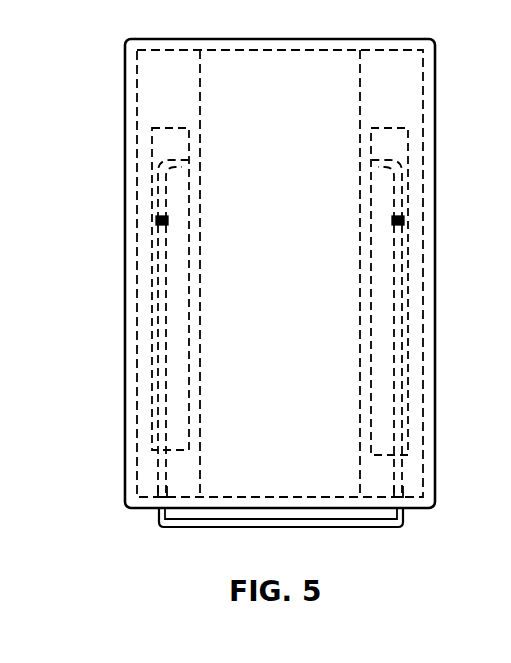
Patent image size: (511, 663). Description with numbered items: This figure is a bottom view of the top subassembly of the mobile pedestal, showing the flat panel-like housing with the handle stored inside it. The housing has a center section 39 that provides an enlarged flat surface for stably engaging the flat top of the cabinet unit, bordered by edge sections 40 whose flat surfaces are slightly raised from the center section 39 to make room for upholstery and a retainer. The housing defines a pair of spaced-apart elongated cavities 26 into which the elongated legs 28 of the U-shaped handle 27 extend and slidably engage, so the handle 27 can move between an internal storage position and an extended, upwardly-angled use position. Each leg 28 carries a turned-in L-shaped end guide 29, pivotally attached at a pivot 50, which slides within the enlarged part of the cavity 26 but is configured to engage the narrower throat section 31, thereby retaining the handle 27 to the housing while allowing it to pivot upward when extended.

The edge sections 40 is at (137, 68).
The center section 39 is at (274, 118).
The elongated legs 28 is at (166, 328).
The elongated cavities 26 is at (172, 150).
The L-shaped end guides 29 is at (168, 168).
The pivots 50 is at (157, 224).
The narrower throat section 31 is at (156, 484).
The U-shaped handle 27 is at (347, 540).